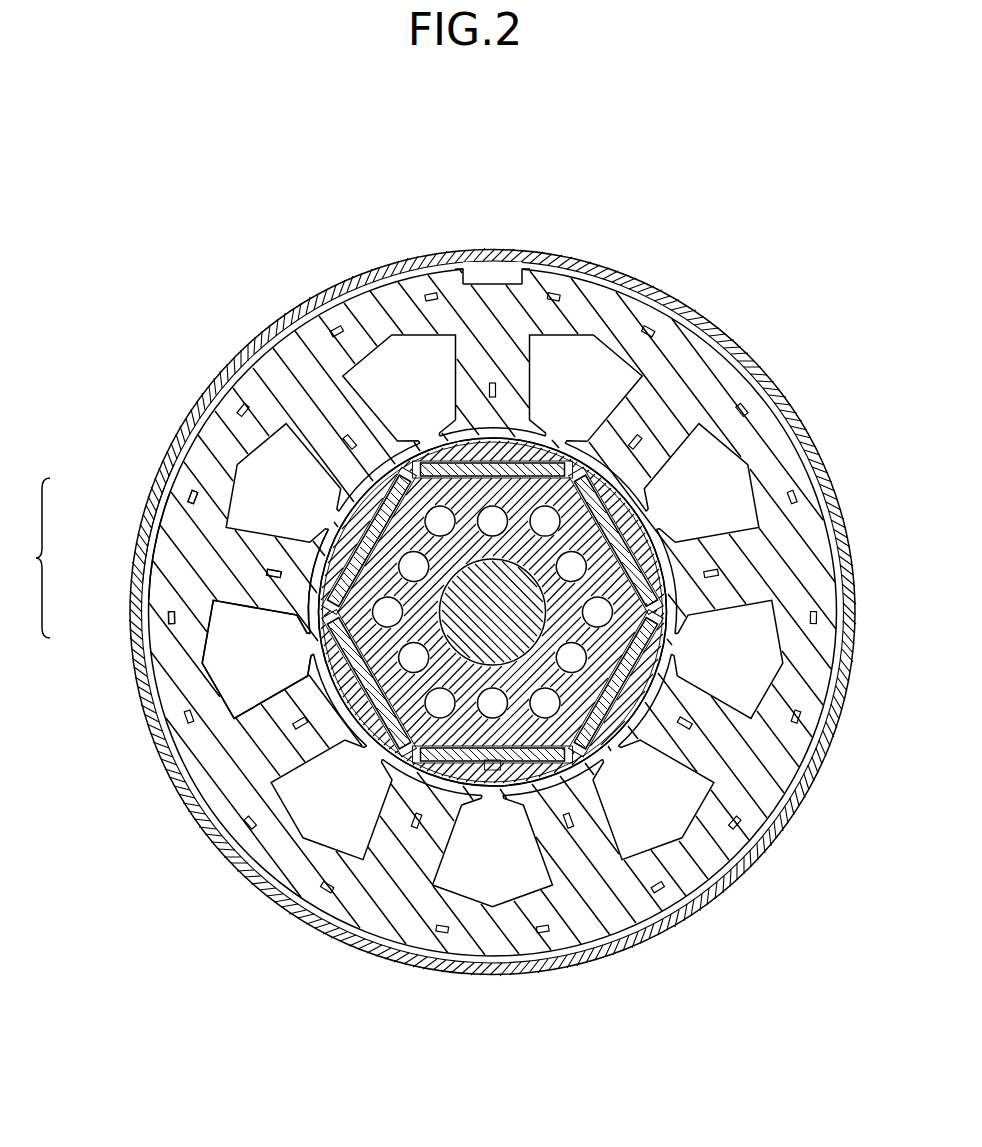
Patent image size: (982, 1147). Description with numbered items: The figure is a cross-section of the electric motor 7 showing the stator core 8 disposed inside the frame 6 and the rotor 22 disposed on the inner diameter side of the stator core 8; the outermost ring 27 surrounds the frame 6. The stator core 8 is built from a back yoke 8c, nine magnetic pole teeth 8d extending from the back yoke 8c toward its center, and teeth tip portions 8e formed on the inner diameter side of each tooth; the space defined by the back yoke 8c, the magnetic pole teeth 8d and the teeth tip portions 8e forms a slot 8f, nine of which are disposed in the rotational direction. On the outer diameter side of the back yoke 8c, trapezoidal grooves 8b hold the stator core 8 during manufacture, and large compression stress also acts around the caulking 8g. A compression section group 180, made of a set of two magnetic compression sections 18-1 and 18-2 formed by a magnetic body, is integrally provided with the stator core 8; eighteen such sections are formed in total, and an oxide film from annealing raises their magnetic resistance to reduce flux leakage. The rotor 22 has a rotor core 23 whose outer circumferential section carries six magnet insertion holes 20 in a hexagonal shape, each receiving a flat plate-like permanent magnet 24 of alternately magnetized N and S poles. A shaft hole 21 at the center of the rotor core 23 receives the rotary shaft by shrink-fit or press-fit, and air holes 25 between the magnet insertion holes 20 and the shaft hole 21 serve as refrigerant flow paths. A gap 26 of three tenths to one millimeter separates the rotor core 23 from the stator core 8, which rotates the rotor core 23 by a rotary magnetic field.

The electric motor 7 is at (794, 366).
The housing 27 is at (607, 277).
The frame 6 is at (172, 458).
The compression section group 180 is at (565, 165).
The magnetic compression section 18-1 is at (451, 272).
The magnetic compression section 18-2 is at (531, 272).
The stator core 8 is at (35, 558).
The grooves 8b is at (163, 547).
The back yoke 8c is at (197, 527).
The magnetic pole teeth 8d is at (270, 593).
The teeth tip portions 8e is at (310, 628).
The caulking 8g is at (167, 613).
The slot 8f is at (248, 653).
The rotor 22 is at (331, 519).
The gap 26 is at (335, 684).
The magnet insertion holes 20 is at (576, 730).
The permanent magnets 24 is at (566, 740).
The rotor core 23 is at (485, 764).
The air holes 25 is at (547, 722).
The shaft hole 21 is at (470, 648).